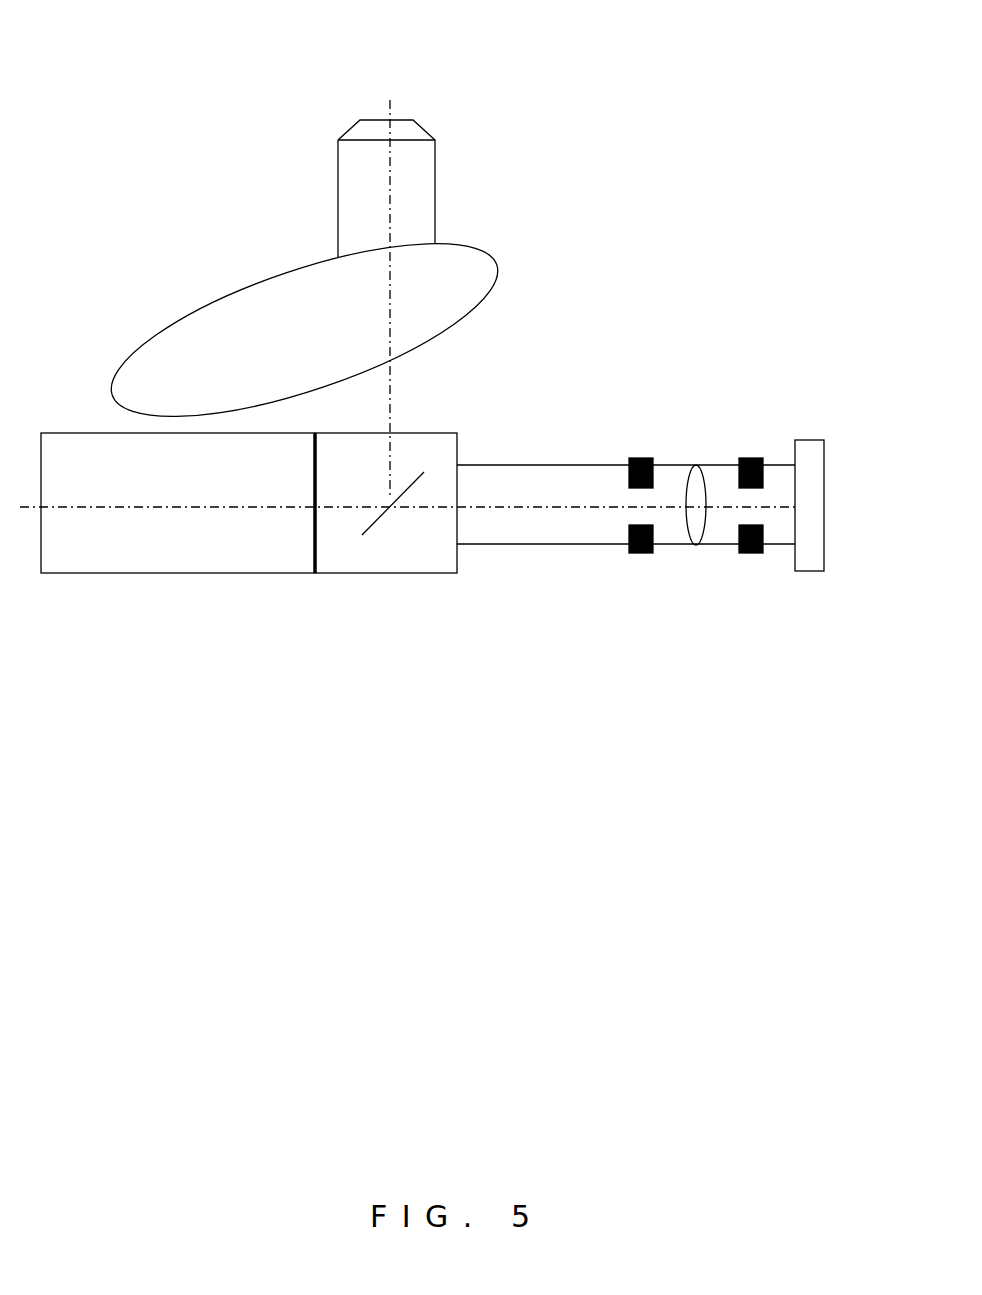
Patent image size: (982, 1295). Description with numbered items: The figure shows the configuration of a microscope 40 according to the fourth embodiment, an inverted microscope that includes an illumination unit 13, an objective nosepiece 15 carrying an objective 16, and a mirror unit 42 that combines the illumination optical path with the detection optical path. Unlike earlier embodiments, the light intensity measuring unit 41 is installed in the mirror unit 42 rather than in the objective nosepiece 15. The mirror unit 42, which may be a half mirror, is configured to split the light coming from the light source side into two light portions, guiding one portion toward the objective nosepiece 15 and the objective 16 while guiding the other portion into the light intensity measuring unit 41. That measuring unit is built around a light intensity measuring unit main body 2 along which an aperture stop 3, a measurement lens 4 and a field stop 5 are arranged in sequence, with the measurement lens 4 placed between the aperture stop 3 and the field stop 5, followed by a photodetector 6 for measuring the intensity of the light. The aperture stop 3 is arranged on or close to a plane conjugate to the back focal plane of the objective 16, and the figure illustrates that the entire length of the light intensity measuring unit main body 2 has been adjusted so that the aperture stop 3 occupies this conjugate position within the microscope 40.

The microscope 40 is at (819, 44).
The light intensity measuring unit 41 is at (802, 387).
The light intensity measuring unit main body 2 is at (587, 465).
The aperture stop 3 is at (640, 555).
The measurement lens 4 is at (696, 545).
The field stop 5 is at (750, 555).
The photodetector 6 is at (817, 515).
The illumination unit 13 is at (213, 575).
The objective nosepiece 15 is at (498, 268).
The objective 16 is at (435, 190).
The mirror unit 42 is at (388, 575).